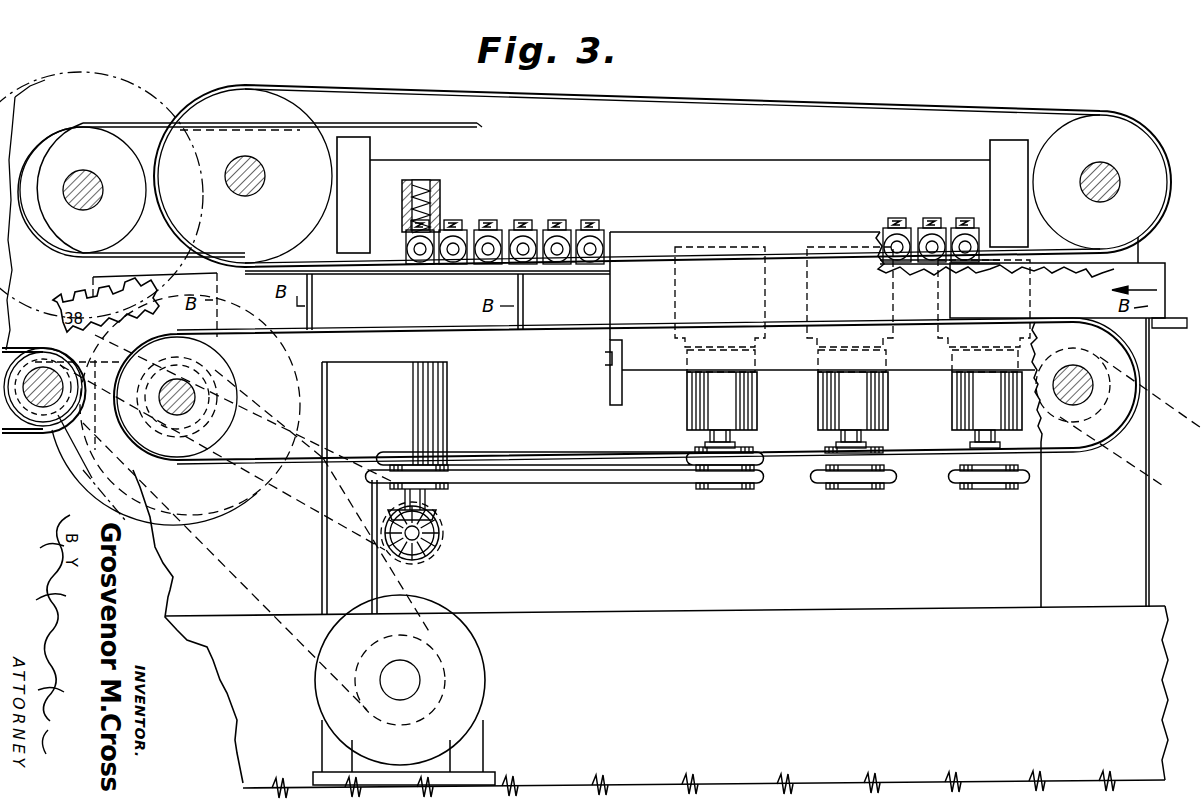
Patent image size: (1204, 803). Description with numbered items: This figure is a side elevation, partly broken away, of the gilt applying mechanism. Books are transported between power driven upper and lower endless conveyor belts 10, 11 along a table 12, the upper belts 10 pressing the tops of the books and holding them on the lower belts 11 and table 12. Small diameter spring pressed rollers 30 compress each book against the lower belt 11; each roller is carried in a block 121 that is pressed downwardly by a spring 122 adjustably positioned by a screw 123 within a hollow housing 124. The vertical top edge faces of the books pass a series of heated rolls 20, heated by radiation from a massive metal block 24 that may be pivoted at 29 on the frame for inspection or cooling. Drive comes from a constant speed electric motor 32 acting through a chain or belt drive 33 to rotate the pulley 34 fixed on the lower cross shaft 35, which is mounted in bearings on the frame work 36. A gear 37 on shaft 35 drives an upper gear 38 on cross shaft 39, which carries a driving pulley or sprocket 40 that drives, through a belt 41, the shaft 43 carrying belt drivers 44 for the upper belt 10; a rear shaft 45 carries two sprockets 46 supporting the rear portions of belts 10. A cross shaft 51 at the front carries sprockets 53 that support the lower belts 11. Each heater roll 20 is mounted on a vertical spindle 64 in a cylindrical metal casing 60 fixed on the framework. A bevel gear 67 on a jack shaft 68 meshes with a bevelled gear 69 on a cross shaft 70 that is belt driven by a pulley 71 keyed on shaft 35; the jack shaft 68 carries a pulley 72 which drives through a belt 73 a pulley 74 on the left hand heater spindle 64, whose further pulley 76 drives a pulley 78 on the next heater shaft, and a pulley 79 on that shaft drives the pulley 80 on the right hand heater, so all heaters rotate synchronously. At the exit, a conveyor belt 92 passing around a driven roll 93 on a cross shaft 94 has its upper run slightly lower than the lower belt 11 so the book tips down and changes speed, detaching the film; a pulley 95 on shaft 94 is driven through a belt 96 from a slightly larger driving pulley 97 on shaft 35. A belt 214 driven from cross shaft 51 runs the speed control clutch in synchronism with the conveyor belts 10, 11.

The upper endless conveyor belt 10 is at (818, 108).
The lower endless conveyor belt 11 is at (409, 326).
The table 12 is at (338, 338).
The heated roll 20 is at (676, 307).
The metal block 24 is at (702, 236).
The pivot 29 is at (604, 370).
The rollers 30 is at (424, 266).
The electric motor 32 is at (484, 663).
The chain or belt drive 33 is at (246, 580).
The pulley 34 is at (206, 478).
The lower cross shaft 35 is at (177, 397).
The frame work 36 is at (660, 612).
The gear 37 is at (97, 510).
The upper gear 38 is at (103, 70).
The cross shaft 39 is at (83, 190).
The driving pulley or sprocket 40 is at (135, 222).
The belt 41 is at (125, 122).
The shaft 43 is at (1100, 182).
The belt drivers 44 is at (1052, 136).
The shaft 45 is at (245, 176).
The sprockets 46 is at (327, 147).
The cross shaft 51 is at (1073, 385).
The sprockets 53 is at (1052, 334).
The cylindrical metal casing 60 is at (757, 390).
The spindle 64 is at (692, 444).
The bevel gear 67 is at (442, 521).
The jack shaft 68 is at (459, 464).
The bevelled gear 69 is at (422, 535).
The cross shaft 70 is at (426, 556).
The pulley 71 is at (192, 362).
The pulley 72 is at (440, 500).
The belt 73 is at (600, 480).
The pulley 74 is at (696, 490).
The pulley 76 is at (742, 448).
The pulley 78 is at (875, 448).
The pulley 79 is at (884, 490).
The pulley 80 is at (980, 492).
The conveyor belt 92 is at (18, 435).
The driven roll 93 is at (46, 435).
The cross shaft 94 is at (44, 390).
The pulley 95 is at (40, 352).
The belt 96 is at (78, 470).
The driving pulley 97 is at (146, 438).
The block 121 is at (540, 228).
The spring 122 is at (440, 204).
The screw 123 is at (424, 180).
The hollow housing 124 is at (618, 165).
The belt 214 is at (1178, 436).